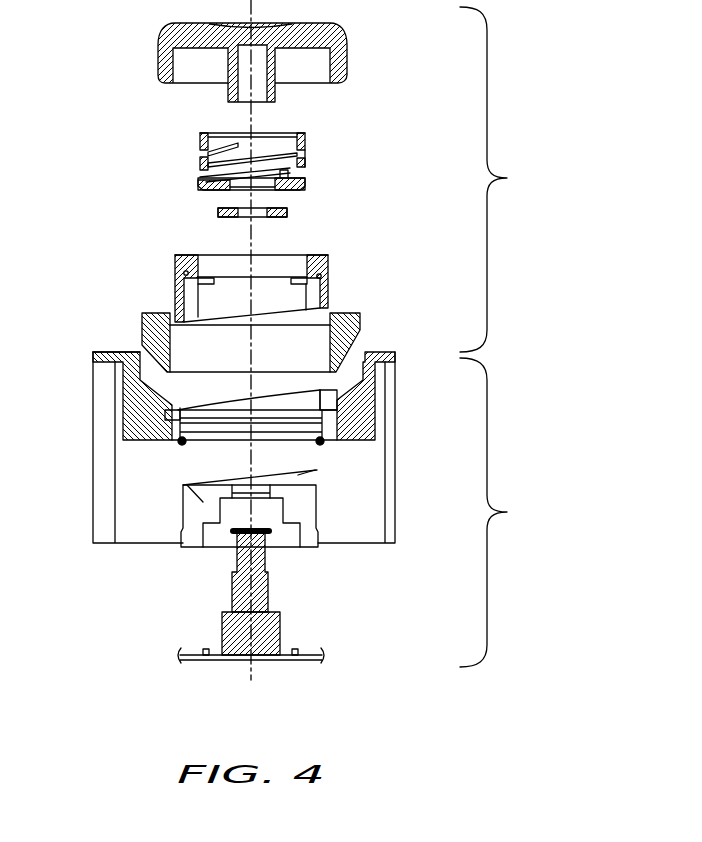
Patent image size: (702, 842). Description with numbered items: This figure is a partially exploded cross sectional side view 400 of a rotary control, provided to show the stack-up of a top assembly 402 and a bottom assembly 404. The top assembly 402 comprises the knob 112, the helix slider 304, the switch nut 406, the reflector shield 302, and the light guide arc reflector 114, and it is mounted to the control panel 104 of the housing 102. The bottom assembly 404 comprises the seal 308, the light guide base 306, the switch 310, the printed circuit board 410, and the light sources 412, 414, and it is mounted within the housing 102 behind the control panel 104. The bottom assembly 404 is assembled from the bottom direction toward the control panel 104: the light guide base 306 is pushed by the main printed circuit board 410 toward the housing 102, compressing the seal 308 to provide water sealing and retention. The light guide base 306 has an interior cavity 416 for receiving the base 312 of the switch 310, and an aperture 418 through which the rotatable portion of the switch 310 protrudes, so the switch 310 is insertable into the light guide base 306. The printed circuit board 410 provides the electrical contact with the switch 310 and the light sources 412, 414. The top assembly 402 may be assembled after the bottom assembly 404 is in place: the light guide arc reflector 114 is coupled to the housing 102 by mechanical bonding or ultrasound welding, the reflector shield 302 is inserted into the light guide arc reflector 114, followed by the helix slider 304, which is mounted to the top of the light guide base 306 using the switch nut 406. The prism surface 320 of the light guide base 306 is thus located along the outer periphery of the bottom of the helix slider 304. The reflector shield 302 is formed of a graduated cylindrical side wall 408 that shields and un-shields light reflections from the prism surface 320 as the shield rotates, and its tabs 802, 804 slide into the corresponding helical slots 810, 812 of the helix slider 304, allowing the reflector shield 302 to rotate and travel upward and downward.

The knob 112 is at (347, 62).
The helix slider 304 is at (305, 163).
The helical slot 810 is at (202, 152).
The helical slot 812 is at (303, 179).
The switch nut 406 is at (288, 213).
The graduated cylindrical side wall 408 is at (184, 273).
The reflector shield 302 is at (328, 265).
The tab 802 is at (200, 297).
The tab 804 is at (307, 296).
The control panel 104 is at (118, 355).
The light guide arc reflector 114 is at (360, 321).
The housing 102 is at (93, 411).
The seal 308 is at (327, 427).
The aperture 418 is at (315, 469).
The prism surface 320 is at (170, 474).
The light guide base 306 is at (310, 517).
The interior cavity 416 is at (214, 537).
The switch 310 is at (268, 591).
The base of switch 312 is at (280, 624).
The light source 412 is at (205, 648).
The light source 414 is at (298, 650).
The printed circuit board 410 is at (286, 661).
The top assembly 402 is at (507, 178).
The bottom assembly 404 is at (507, 512).
The partially exploded cross sectional side view 400 is at (586, 686).